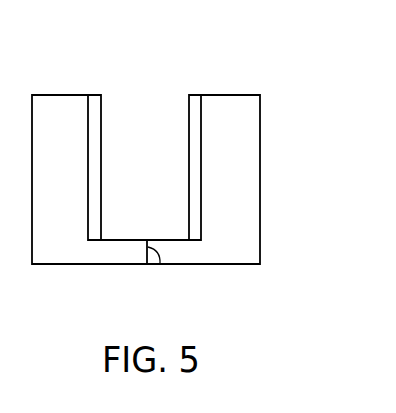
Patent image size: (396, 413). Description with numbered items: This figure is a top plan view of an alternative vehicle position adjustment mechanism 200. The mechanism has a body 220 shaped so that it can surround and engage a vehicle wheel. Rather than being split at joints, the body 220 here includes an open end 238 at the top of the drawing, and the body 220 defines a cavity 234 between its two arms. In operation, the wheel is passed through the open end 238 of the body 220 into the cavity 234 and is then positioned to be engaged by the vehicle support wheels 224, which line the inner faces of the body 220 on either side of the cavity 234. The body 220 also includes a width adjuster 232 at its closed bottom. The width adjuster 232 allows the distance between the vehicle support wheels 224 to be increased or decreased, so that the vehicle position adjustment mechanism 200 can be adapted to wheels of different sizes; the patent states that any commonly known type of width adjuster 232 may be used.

The vehicle position adjustment mechanism 200 is at (238, 88).
The body 220 is at (261, 209).
The vehicle support wheels 224 is at (101, 97).
The width adjuster 232 is at (160, 264).
The cavity 234 is at (129, 146).
The open end 238 is at (150, 98).